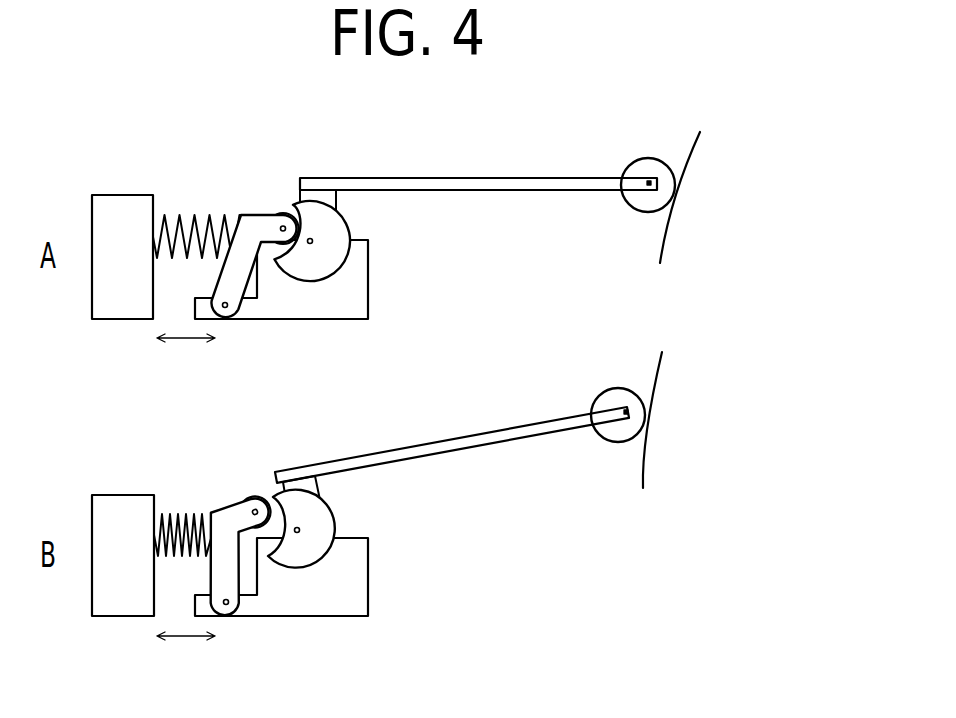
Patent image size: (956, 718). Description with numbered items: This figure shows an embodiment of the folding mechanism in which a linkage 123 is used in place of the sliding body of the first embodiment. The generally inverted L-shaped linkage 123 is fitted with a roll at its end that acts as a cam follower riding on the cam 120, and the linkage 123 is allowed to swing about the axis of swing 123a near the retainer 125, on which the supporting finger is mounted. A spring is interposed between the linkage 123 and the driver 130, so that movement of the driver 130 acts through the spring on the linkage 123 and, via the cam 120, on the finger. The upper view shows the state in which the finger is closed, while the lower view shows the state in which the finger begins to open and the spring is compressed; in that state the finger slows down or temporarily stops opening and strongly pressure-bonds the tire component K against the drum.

The cam 120 is at (350, 224).
The linkage 123 is at (257, 212).
The axis of swing 123a is at (226, 307).
The retainer 125 is at (368, 298).
The driver 130 is at (120, 195).
The tire component K is at (697, 135).